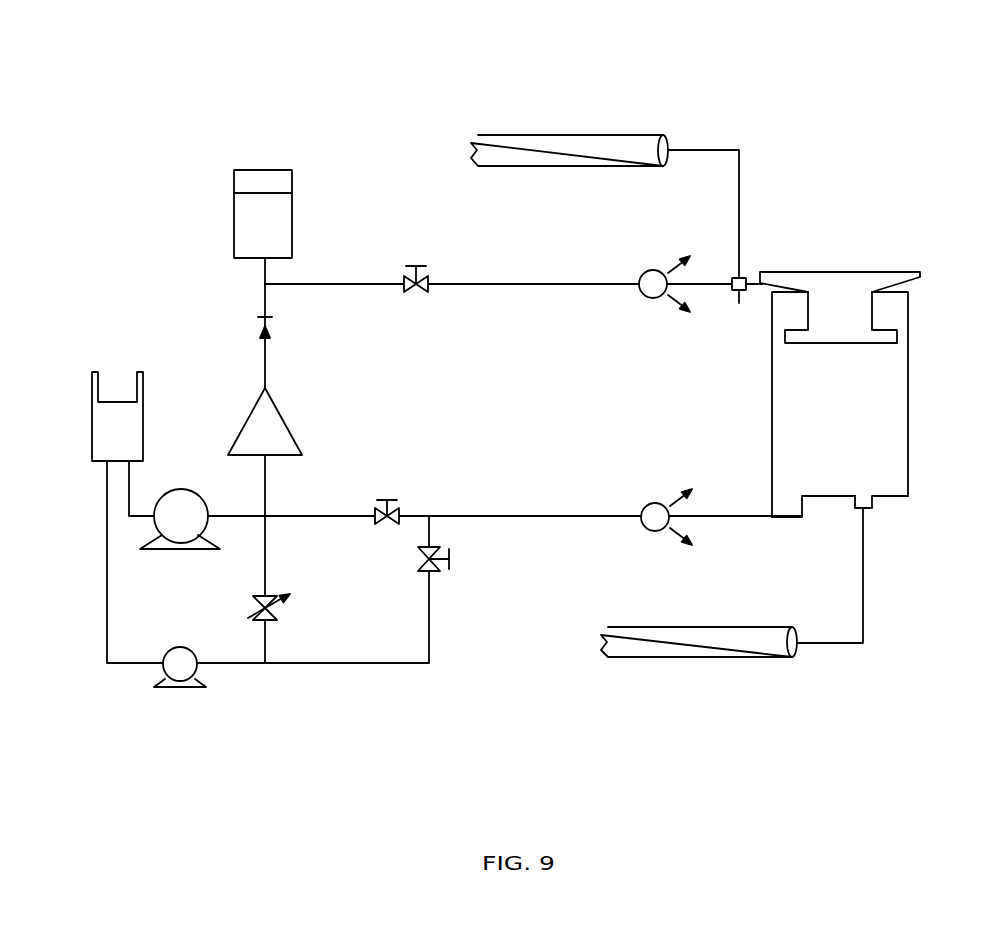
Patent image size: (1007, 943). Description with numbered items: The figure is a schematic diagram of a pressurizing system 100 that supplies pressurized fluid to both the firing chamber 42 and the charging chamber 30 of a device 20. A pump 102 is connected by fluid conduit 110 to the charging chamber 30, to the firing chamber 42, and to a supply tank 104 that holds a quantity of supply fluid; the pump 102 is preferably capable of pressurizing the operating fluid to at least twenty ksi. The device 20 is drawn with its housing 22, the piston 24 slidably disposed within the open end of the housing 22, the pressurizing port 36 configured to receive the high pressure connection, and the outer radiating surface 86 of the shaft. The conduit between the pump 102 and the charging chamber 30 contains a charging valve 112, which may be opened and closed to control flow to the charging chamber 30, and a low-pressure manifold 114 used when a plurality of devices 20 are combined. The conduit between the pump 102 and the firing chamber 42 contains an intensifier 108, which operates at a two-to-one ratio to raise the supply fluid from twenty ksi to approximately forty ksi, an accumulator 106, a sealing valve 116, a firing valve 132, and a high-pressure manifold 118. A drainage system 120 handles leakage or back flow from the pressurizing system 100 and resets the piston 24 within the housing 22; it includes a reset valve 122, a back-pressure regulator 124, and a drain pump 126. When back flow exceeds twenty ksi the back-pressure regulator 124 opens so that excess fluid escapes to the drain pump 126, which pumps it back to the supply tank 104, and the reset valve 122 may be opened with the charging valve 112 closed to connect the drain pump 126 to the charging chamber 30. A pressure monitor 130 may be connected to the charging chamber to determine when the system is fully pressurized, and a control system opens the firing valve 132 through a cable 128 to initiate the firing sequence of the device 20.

The pressurizing system 100 is at (460, 80).
The pump 102 is at (170, 490).
The supply tank 104 is at (92, 440).
The accumulator 106 is at (292, 218).
The intensifier 108 is at (252, 412).
The fluid conduit 110 is at (530, 283).
The charging valve 112 is at (388, 500).
The low-pressure manifold 114 is at (652, 502).
The sealing valve 116 is at (416, 263).
The high-pressure manifold 118 is at (650, 298).
The drainage system 120 is at (284, 740).
The reset valve 122 is at (440, 566).
The back-pressure regulator 124 is at (268, 594).
The drain pump 126 is at (180, 682).
The cable 128 is at (573, 157).
The pressure monitor 130 is at (703, 648).
The firing valve 132 is at (741, 278).
The device 20 is at (840, 374).
The housing 22 is at (910, 318).
The piston 24 is at (885, 338).
The charging chamber 30 is at (893, 498).
The pressurizing port 36 is at (850, 500).
The firing chamber 42 is at (768, 290).
The outer radiating surface 86 is at (788, 270).